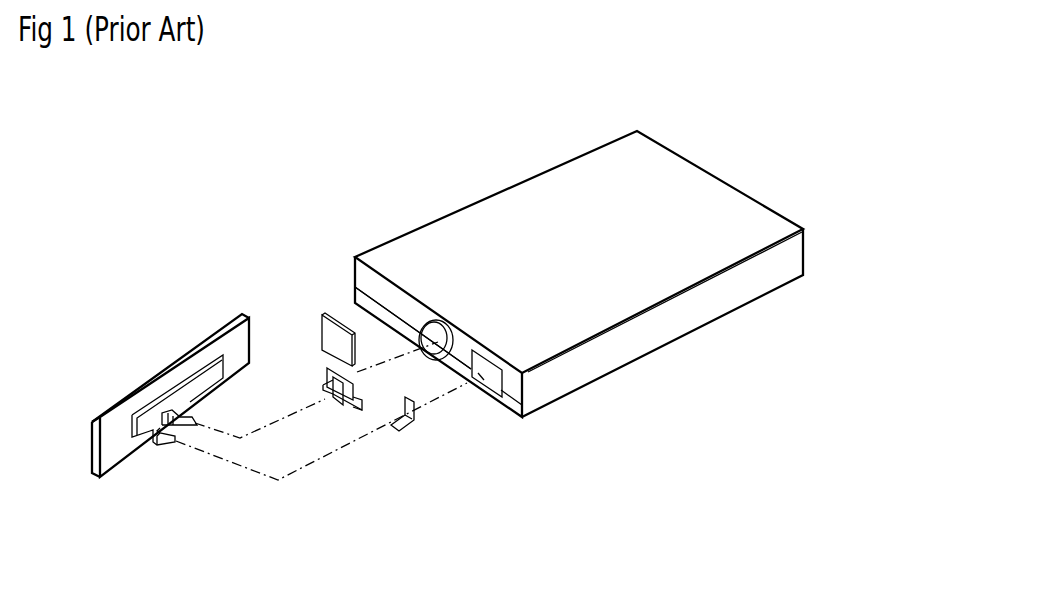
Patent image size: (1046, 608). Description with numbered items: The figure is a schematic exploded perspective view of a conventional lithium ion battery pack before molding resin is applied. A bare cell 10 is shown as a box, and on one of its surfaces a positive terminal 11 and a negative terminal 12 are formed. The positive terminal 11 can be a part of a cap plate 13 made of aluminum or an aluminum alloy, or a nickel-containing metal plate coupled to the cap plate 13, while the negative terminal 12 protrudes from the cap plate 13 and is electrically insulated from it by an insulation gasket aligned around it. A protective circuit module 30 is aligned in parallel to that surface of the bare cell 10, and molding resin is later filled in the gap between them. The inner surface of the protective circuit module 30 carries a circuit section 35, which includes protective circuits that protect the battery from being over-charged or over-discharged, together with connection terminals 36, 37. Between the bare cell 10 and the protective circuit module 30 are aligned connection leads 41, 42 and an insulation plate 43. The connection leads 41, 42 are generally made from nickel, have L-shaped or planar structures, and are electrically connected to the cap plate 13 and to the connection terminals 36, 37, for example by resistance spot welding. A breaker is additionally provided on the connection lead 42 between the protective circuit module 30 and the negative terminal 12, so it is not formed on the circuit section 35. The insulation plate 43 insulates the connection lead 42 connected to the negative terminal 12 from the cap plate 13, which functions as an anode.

The bare cell 10 is at (520, 203).
The positive terminal 11 is at (490, 380).
The negative terminal 12 is at (428, 335).
The cap plate 13 is at (362, 287).
The protective circuit module 30 is at (113, 426).
The circuit section 35 is at (198, 383).
The connection terminal 36 is at (153, 440).
The connection terminal 37 is at (195, 415).
The connection lead 41 is at (410, 427).
The connection lead 42 is at (333, 408).
The insulation plate 43 is at (332, 337).